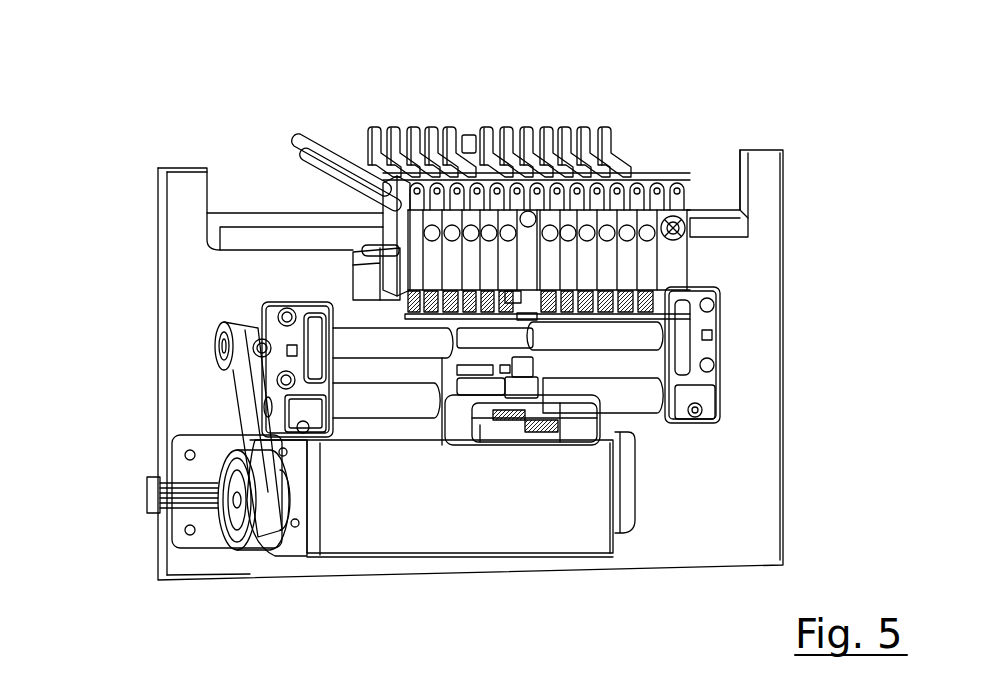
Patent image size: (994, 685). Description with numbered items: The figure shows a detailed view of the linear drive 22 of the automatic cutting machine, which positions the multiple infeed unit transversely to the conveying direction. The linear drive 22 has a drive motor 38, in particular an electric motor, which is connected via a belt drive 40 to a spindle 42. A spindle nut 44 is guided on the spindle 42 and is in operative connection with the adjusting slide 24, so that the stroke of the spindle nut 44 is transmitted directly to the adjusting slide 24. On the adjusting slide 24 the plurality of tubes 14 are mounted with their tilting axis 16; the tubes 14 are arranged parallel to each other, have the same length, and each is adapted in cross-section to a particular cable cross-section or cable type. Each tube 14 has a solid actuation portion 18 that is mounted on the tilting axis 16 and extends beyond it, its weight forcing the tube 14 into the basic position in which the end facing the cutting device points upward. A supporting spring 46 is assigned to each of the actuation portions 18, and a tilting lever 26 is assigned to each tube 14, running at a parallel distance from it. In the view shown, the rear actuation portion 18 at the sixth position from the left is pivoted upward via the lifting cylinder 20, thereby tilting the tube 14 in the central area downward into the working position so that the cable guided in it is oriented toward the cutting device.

The tubes 14 is at (300, 140).
The tilting axis 16 is at (367, 252).
The actuation portion 18 is at (688, 210).
The lifting cylinder 20 is at (590, 398).
The linear drive 22 is at (427, 362).
The adjusting slide 24 is at (368, 278).
The tilting lever 26 is at (600, 127).
The drive motor 38 is at (413, 527).
The belt drive 40 is at (226, 388).
The spindle 42 is at (527, 342).
The spindle nut 44 is at (610, 337).
The supporting spring 46 is at (404, 314).